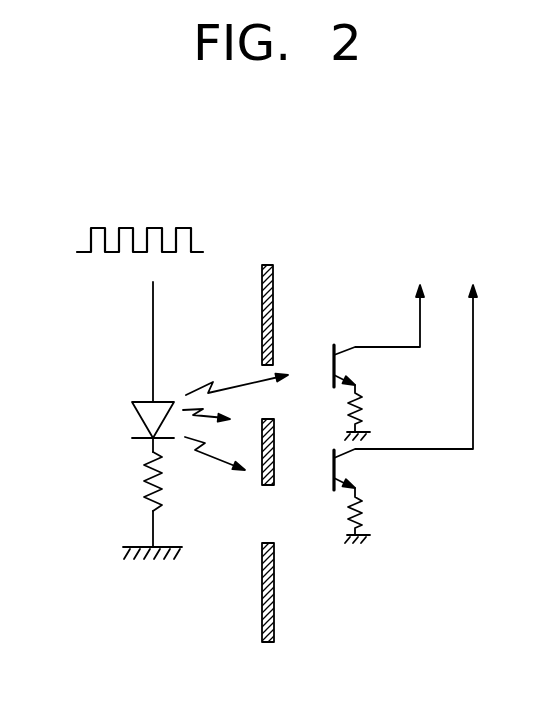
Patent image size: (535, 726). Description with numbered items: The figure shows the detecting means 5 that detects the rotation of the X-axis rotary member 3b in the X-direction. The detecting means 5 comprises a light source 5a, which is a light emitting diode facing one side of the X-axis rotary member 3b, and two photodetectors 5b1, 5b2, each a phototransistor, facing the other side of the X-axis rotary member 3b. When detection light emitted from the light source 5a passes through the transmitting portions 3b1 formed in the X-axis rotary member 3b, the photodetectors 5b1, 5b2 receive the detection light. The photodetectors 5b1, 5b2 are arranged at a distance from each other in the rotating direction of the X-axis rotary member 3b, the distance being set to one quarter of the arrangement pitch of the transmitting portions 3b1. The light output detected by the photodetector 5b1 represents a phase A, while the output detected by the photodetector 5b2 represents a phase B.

The detecting means 5 is at (95, 573).
The light source 5a is at (138, 424).
The X-axis rotary member 3b is at (273, 290).
The transmitting portions 3b1 is at (272, 400).
The photodetector 5b1 is at (330, 344).
The photodetector 5b2 is at (327, 487).